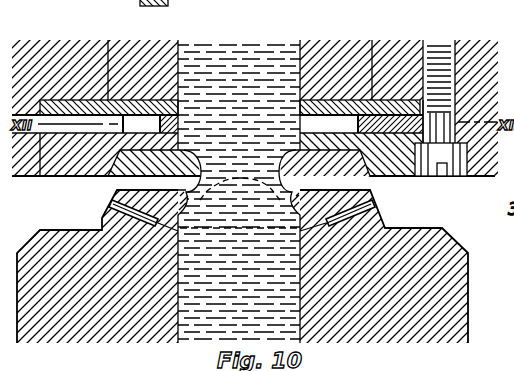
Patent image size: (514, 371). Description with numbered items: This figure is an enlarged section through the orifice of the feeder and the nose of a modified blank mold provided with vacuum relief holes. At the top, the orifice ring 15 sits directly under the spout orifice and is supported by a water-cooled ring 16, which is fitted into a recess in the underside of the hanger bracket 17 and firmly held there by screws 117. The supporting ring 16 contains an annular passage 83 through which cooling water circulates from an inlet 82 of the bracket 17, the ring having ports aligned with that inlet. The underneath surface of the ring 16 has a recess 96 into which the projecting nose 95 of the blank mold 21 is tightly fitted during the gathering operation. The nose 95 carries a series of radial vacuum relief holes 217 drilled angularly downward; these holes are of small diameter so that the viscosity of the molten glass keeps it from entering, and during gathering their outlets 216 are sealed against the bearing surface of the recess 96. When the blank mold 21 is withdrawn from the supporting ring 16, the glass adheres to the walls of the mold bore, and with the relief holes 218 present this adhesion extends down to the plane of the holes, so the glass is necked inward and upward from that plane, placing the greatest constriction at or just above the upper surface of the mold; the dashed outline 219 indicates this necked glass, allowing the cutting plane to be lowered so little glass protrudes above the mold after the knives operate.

The hanger bracket 17 is at (64, 52).
The inlet 82 is at (75, 117).
The annular passage 83 is at (318, 122).
The orifice ring 15 is at (323, 54).
The recess 96 is at (298, 158).
The workpiece cap 219 is at (216, 193).
The water-cooled ring 16 is at (67, 160).
The outlets 216 is at (112, 201).
The vacuum relief holes 218 is at (182, 231).
The radial vacuum relief holes 217 is at (303, 231).
The nose 95 is at (377, 211).
The screws 117 is at (453, 176).
The blank mold 21 is at (458, 311).